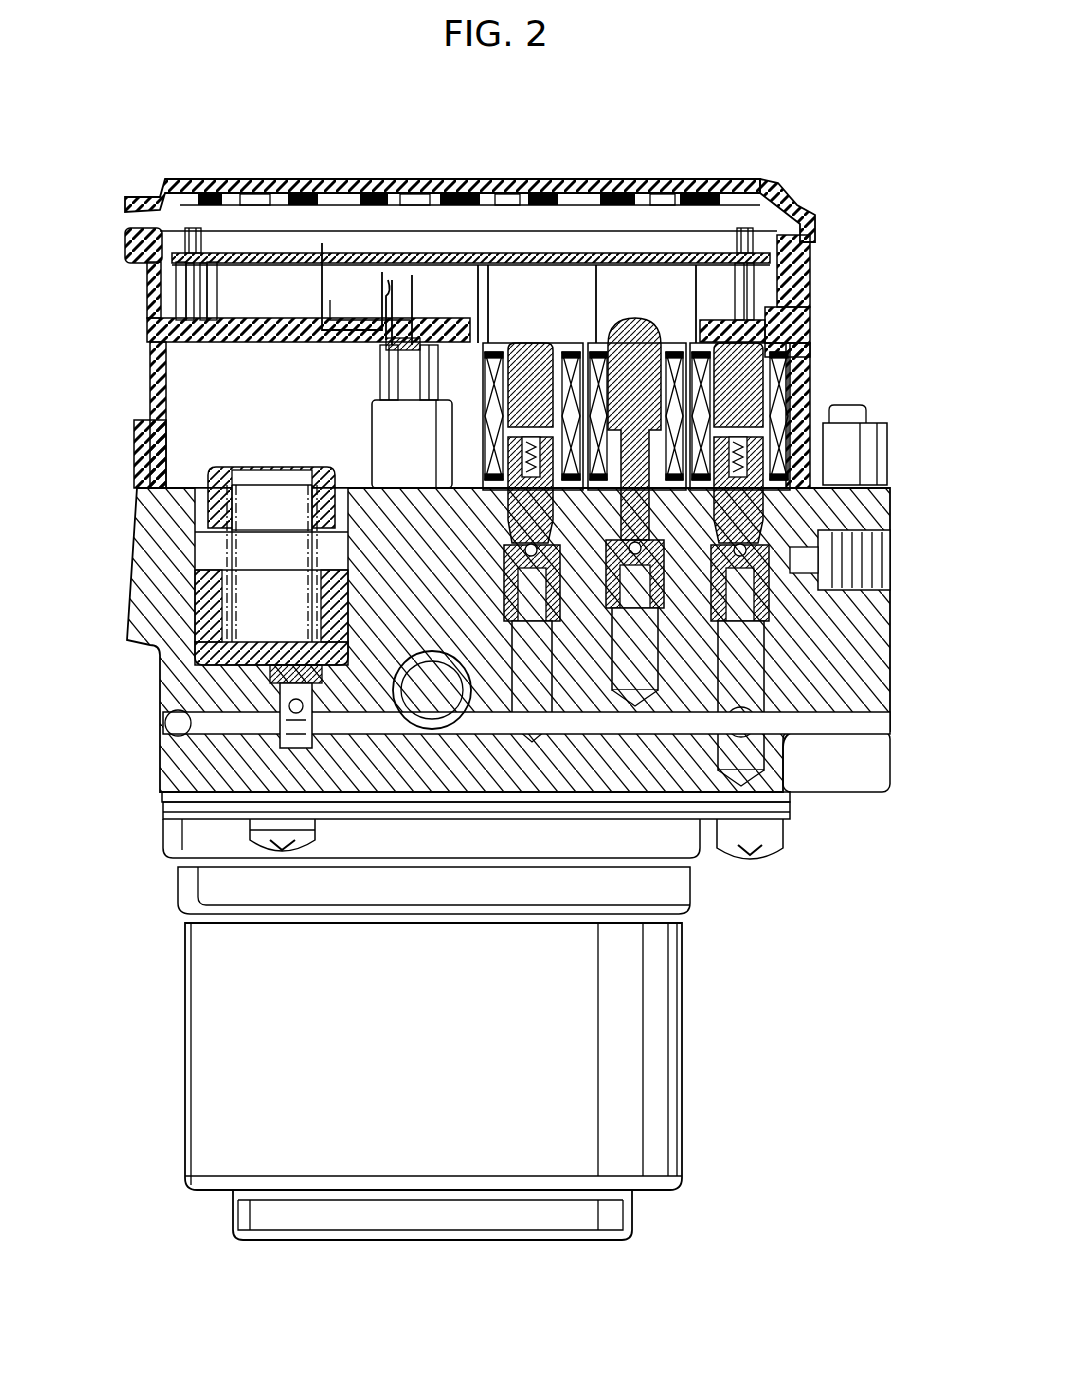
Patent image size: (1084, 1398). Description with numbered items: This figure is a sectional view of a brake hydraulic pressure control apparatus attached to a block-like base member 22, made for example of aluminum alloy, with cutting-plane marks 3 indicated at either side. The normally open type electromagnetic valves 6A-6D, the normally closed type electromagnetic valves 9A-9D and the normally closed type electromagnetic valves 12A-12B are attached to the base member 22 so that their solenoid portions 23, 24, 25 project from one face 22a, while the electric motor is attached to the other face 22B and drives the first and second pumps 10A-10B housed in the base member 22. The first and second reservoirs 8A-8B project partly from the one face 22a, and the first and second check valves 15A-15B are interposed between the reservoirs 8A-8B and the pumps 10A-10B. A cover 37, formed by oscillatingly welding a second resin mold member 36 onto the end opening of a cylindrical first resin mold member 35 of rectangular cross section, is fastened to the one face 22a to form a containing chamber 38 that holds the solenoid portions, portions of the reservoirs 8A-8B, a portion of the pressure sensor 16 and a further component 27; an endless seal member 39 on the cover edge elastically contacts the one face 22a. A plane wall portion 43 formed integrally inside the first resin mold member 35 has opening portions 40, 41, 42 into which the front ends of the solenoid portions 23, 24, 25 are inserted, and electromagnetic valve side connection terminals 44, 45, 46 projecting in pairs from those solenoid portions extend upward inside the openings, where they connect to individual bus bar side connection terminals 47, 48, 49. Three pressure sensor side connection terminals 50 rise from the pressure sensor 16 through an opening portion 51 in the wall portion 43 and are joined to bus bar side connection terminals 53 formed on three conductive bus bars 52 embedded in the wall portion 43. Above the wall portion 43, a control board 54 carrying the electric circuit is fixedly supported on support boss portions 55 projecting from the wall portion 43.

The section line III-III 3 is at (130, 238).
The normally open type electromagnetic valves 6A-6D is at (580, 592).
The first and second reservoirs 8A-8B is at (262, 672).
The normally closed type electromagnetic valves 9A-9D is at (775, 600).
The first and second pumps 10A-10B is at (462, 736).
The normally closed type electromagnetic valves 12A-12B is at (701, 511).
The first and second check valves 15A-15B is at (322, 738).
The pressure sensor 16 is at (358, 398).
The base member 22 is at (860, 692).
The one face of the base member 22a is at (405, 470).
The other face of the base member 22B is at (368, 802).
The solenoid portions 23 is at (638, 316).
The solenoid portions 24 is at (790, 348).
The solenoid portions 25 is at (548, 258).
The capacitor 27 is at (385, 437).
The first resin mold member 35 is at (800, 205).
The second resin mold member 36 is at (702, 190).
The cover 37 is at (470, 164).
The containing chamber 38 is at (215, 403).
The seal member 39 is at (842, 475).
The opening portions 40 is at (612, 340).
The opening portions 41 is at (800, 312).
The opening portions 42 is at (515, 340).
The wall portion 43 is at (230, 318).
The electromagnetic valve side connection terminals 44 is at (596, 340).
The electromagnetic valve side connection terminals 45 is at (692, 340).
The electromagnetic valve side connection terminals 46 is at (488, 340).
The individual bus bar side connection terminals 47 is at (560, 340).
The individual bus bar side connection terminals 48 is at (662, 340).
The individual bus bar side connection terminals 49 is at (478, 262).
The pressure sensor side connection terminals 50 is at (392, 282).
The opening portion 51 is at (355, 338).
The bus bars 52 is at (318, 288).
The bus bar side connection terminals 53 is at (386, 290).
The control board 54 is at (246, 262).
The support boss portions 55 is at (182, 286).